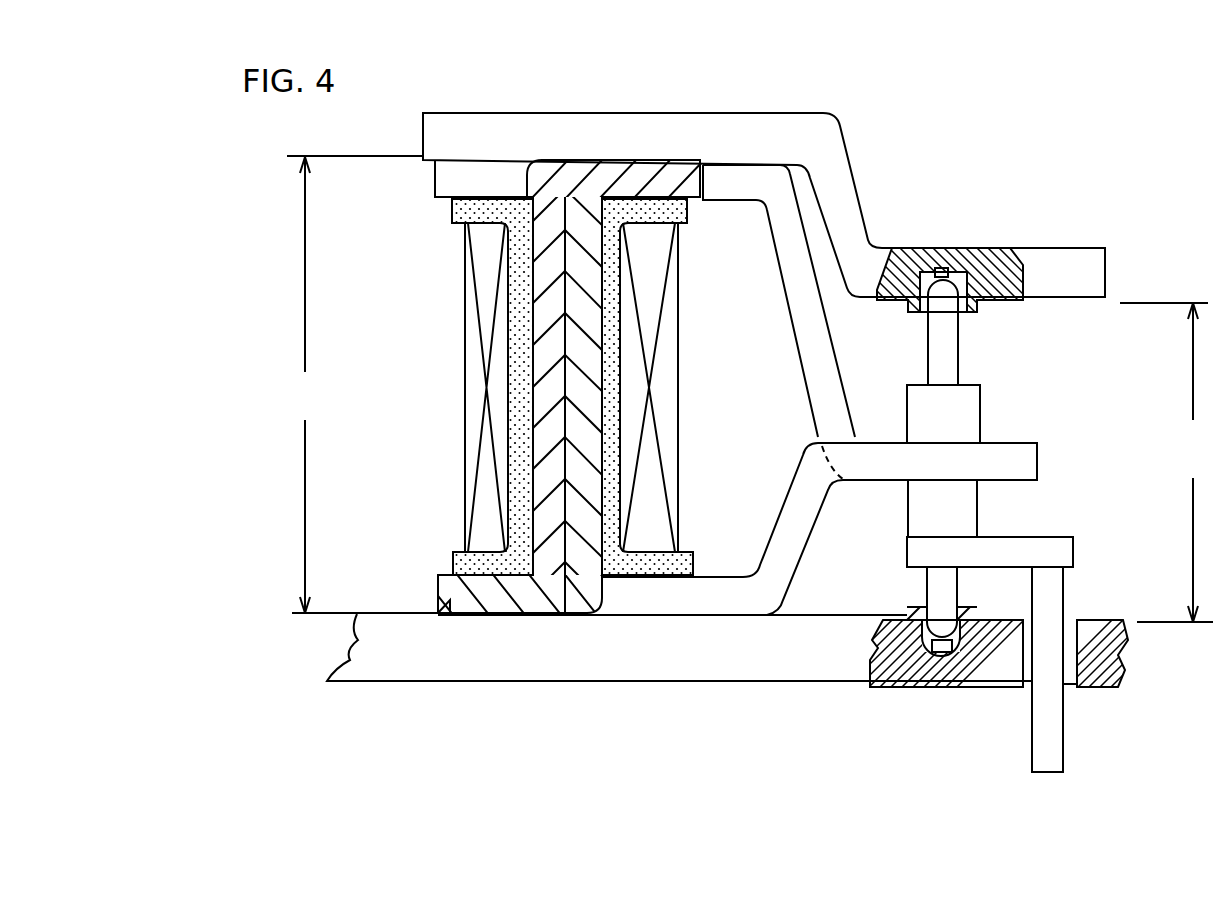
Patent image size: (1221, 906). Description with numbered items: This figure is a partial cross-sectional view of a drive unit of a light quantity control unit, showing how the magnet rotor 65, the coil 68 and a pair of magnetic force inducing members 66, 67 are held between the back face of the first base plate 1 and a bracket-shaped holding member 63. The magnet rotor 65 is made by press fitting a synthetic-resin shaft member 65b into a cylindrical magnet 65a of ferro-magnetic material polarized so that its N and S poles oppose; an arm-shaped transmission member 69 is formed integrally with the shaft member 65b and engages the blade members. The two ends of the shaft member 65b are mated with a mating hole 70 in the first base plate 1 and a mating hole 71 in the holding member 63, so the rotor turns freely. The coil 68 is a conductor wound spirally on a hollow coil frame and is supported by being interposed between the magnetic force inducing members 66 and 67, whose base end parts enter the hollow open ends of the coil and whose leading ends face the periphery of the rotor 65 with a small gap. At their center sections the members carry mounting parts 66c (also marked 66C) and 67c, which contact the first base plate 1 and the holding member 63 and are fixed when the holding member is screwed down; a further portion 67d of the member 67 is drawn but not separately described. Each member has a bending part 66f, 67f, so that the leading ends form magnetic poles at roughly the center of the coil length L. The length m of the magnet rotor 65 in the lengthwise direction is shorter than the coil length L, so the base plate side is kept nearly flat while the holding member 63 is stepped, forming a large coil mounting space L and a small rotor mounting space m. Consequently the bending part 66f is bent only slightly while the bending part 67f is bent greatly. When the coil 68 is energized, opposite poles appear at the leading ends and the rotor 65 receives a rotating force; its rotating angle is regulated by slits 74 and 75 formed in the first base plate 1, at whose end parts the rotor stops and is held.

The first base plate 1 is at (757, 705).
The holding member 63 is at (846, 131).
The magnet rotor 65 is at (968, 425).
The cylindrical shape magnet 65a is at (960, 512).
The shaft member 65b is at (948, 347).
The magnetic force inducing member 66 is at (658, 597).
The mounting part 66c is at (493, 600).
The mounting part 66C is at (590, 424).
The bending part 66f is at (787, 547).
The magnetic force inducing member 67 is at (735, 191).
The mounting part 67c is at (610, 170).
The upper core column half 67d is at (545, 316).
The bending part 67f is at (793, 250).
The coil 68 is at (651, 336).
The arm shape transmission member 69 is at (1050, 757).
The mating hole 70 is at (907, 603).
The mating hole 71 is at (905, 313).
The slit 74 is at (1002, 706).
The slit 75 is at (1027, 690).
The length in lengthwise direction of coil L is at (362, 384).
The length in lengthwise direction of magnet rotor m is at (1167, 462).